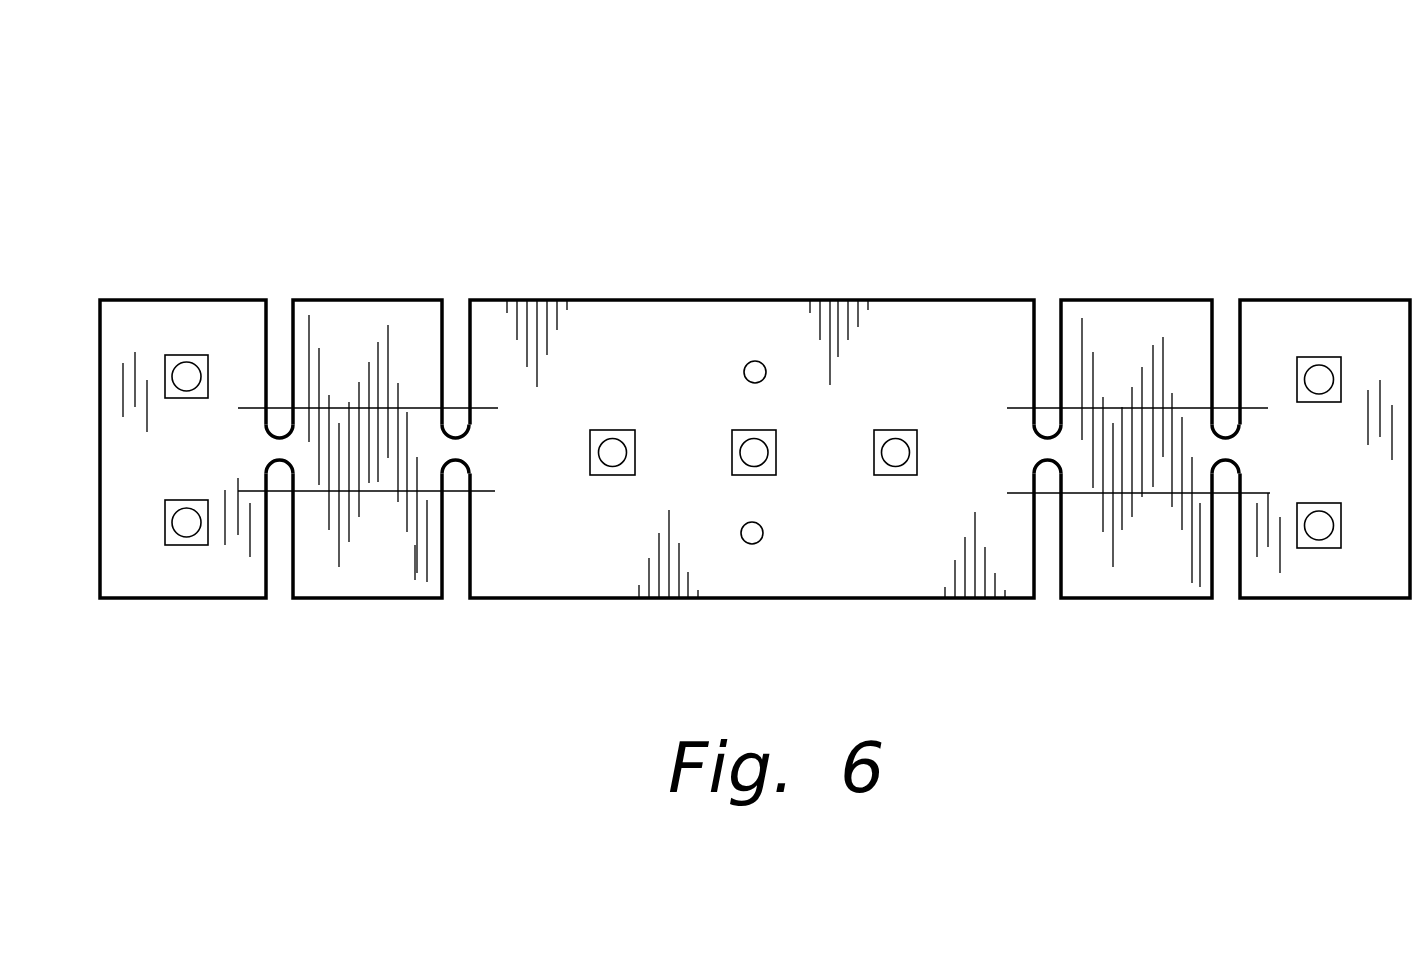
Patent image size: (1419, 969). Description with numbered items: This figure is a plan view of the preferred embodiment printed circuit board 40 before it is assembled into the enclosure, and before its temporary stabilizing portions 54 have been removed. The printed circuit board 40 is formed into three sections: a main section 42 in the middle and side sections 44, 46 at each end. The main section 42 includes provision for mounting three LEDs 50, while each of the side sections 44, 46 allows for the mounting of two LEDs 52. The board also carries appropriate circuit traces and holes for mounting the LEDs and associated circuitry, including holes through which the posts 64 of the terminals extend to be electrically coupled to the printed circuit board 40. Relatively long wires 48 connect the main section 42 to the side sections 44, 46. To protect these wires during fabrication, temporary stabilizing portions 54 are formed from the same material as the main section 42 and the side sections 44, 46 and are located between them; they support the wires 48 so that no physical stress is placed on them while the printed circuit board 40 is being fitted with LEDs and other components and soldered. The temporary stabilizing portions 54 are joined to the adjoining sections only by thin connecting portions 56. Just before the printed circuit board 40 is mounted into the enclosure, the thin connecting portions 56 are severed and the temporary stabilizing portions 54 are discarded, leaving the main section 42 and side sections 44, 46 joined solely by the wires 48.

The printed circuit board 40 is at (1078, 162).
The main section 42 is at (905, 588).
The side section 44 is at (1325, 588).
The side section 46 is at (200, 586).
The wires 48 is at (422, 405).
The LEDs 50 is at (612, 430).
The LEDs 52 is at (165, 356).
The temporary stabilizing portions 54 is at (395, 588).
The thin connecting portions 56 is at (272, 452).
The post 64 is at (744, 367).